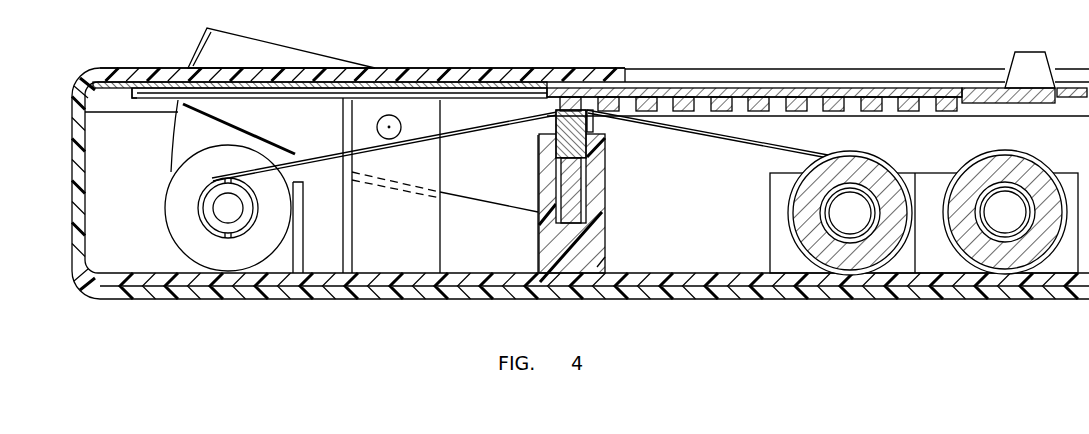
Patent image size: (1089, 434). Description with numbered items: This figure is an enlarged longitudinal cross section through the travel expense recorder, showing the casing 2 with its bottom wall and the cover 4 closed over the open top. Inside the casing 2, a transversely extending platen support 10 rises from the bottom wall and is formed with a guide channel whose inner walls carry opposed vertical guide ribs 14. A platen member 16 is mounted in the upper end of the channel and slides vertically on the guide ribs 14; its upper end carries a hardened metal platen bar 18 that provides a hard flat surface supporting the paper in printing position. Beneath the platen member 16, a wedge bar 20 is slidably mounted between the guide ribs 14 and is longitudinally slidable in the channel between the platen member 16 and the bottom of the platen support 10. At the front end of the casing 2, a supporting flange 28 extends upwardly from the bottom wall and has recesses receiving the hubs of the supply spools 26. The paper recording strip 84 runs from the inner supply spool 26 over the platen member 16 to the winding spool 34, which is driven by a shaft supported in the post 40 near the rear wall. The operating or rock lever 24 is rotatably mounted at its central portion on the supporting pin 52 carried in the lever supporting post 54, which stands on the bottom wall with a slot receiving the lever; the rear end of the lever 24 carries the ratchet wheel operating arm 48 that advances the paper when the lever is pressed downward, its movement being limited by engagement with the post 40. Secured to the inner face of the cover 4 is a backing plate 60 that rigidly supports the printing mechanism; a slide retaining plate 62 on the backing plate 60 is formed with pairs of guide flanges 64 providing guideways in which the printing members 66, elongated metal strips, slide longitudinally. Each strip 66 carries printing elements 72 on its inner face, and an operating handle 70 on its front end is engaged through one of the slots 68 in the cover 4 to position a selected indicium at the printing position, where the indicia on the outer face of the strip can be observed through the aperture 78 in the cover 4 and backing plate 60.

The casing 2 is at (352, 302).
The cover 4 is at (464, 68).
The platen support 10 is at (600, 252).
The guide ribs 14 is at (556, 176).
The platen member 16 is at (588, 145).
The platen bar 18 is at (557, 112).
The wedge bar 20 is at (576, 200).
The operating or rock lever 24 is at (272, 44).
The supply spools 26 is at (790, 183).
The supporting flange 28 is at (776, 248).
The winding spool 34 is at (166, 192).
The post 40 is at (293, 253).
The ratchet wheel operating arm 48 is at (177, 137).
The supporting pin 52 is at (376, 123).
The lever supporting post 54 is at (395, 245).
The backing plate 60 is at (130, 67).
The slide retaining plate 62 is at (163, 87).
The guide flanges 64 is at (140, 99).
The printing members 66 is at (978, 90).
The slots 68 is at (782, 84).
The operating handle 70 is at (1027, 52).
The printing elements 72 is at (903, 97).
The aperture 78 is at (573, 78).
The paper recording strip 84 is at (717, 131).